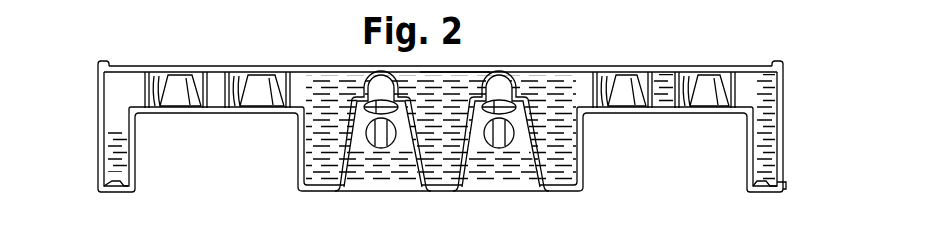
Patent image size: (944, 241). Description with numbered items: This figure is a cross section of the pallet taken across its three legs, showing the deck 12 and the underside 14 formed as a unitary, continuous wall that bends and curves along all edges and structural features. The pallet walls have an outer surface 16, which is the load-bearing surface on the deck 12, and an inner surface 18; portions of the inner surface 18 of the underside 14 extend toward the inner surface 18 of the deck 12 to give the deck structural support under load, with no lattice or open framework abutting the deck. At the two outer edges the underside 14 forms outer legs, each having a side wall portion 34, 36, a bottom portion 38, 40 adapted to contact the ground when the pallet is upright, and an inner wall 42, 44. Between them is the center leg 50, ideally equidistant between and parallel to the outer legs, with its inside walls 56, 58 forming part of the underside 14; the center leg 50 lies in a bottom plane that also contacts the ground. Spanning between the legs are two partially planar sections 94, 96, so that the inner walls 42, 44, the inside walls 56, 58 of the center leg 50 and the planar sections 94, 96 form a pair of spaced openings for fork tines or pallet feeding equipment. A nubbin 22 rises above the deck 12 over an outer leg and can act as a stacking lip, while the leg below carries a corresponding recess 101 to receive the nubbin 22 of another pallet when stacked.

The deck 12 is at (627, 63).
The underside 14 is at (557, 190).
The outer surface 16 is at (561, 66).
The inner surface 18 is at (452, 75).
The nubbin 22 is at (774, 62).
The side wall portion 34 is at (786, 140).
The side wall portion 36 is at (97, 143).
The bottom portion 38 is at (758, 187).
The bottom portion 40 is at (123, 193).
The inner wall 42 is at (747, 172).
The inner wall 44 is at (138, 153).
The center leg 50 is at (528, 180).
The inside wall 56 is at (588, 167).
The inside wall 58 is at (302, 157).
The partially planar section 94 is at (667, 112).
The partially planar section 96 is at (213, 111).
The recess 101 is at (774, 192).